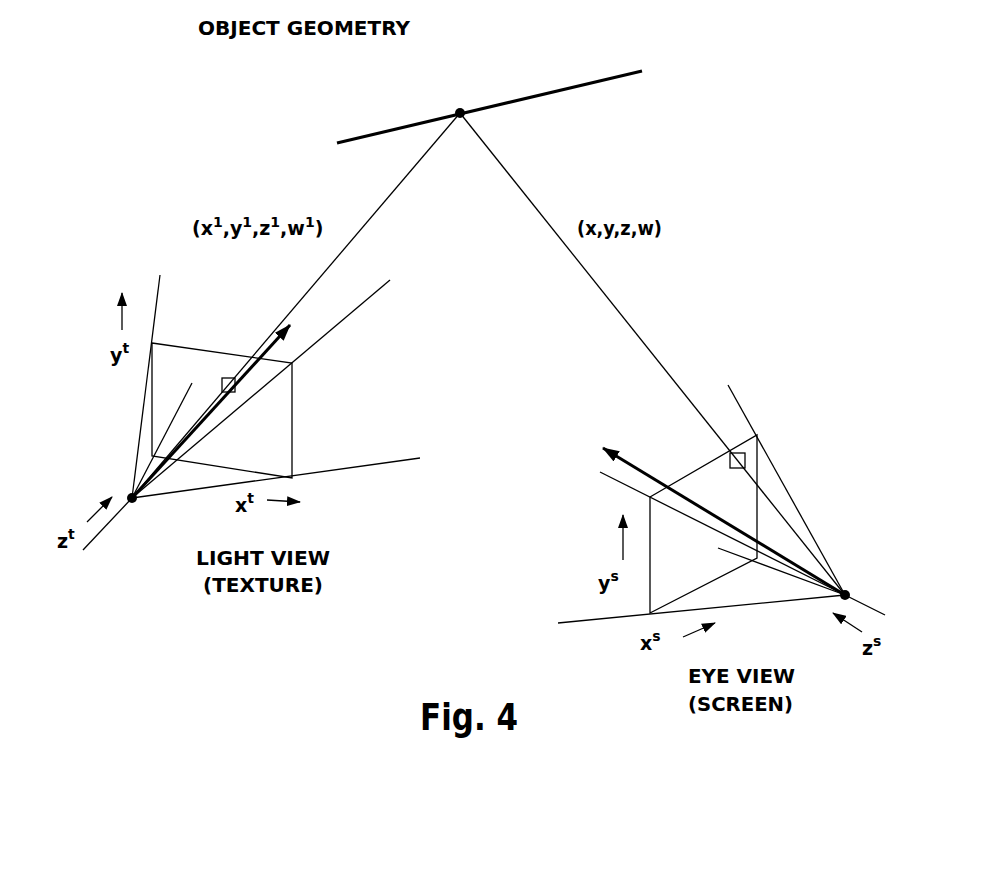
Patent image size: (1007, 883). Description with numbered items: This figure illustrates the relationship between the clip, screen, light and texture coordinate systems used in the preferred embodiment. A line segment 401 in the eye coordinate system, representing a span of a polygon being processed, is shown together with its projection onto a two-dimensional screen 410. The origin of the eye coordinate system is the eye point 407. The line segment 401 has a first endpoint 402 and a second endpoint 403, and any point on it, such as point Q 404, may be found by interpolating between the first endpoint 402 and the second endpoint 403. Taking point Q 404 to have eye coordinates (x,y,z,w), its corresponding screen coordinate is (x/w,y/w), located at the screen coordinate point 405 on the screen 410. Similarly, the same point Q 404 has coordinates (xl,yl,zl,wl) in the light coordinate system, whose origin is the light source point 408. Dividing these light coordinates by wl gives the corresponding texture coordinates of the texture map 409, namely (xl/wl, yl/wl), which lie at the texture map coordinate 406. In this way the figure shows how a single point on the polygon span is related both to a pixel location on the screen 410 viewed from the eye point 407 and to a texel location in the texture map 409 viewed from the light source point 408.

The line segment 401 is at (535, 95).
The endpoint Q1 402 is at (311, 137).
The endpoint Q2 403 is at (657, 47).
The point Q 404 is at (457, 88).
The screen coordinate point 405 is at (738, 451).
The texture map coordinate 406 is at (228, 374).
The eye point 407 is at (861, 566).
The light source point 408 is at (146, 530).
The texture map 409 is at (183, 345).
The screen 410 is at (697, 464).